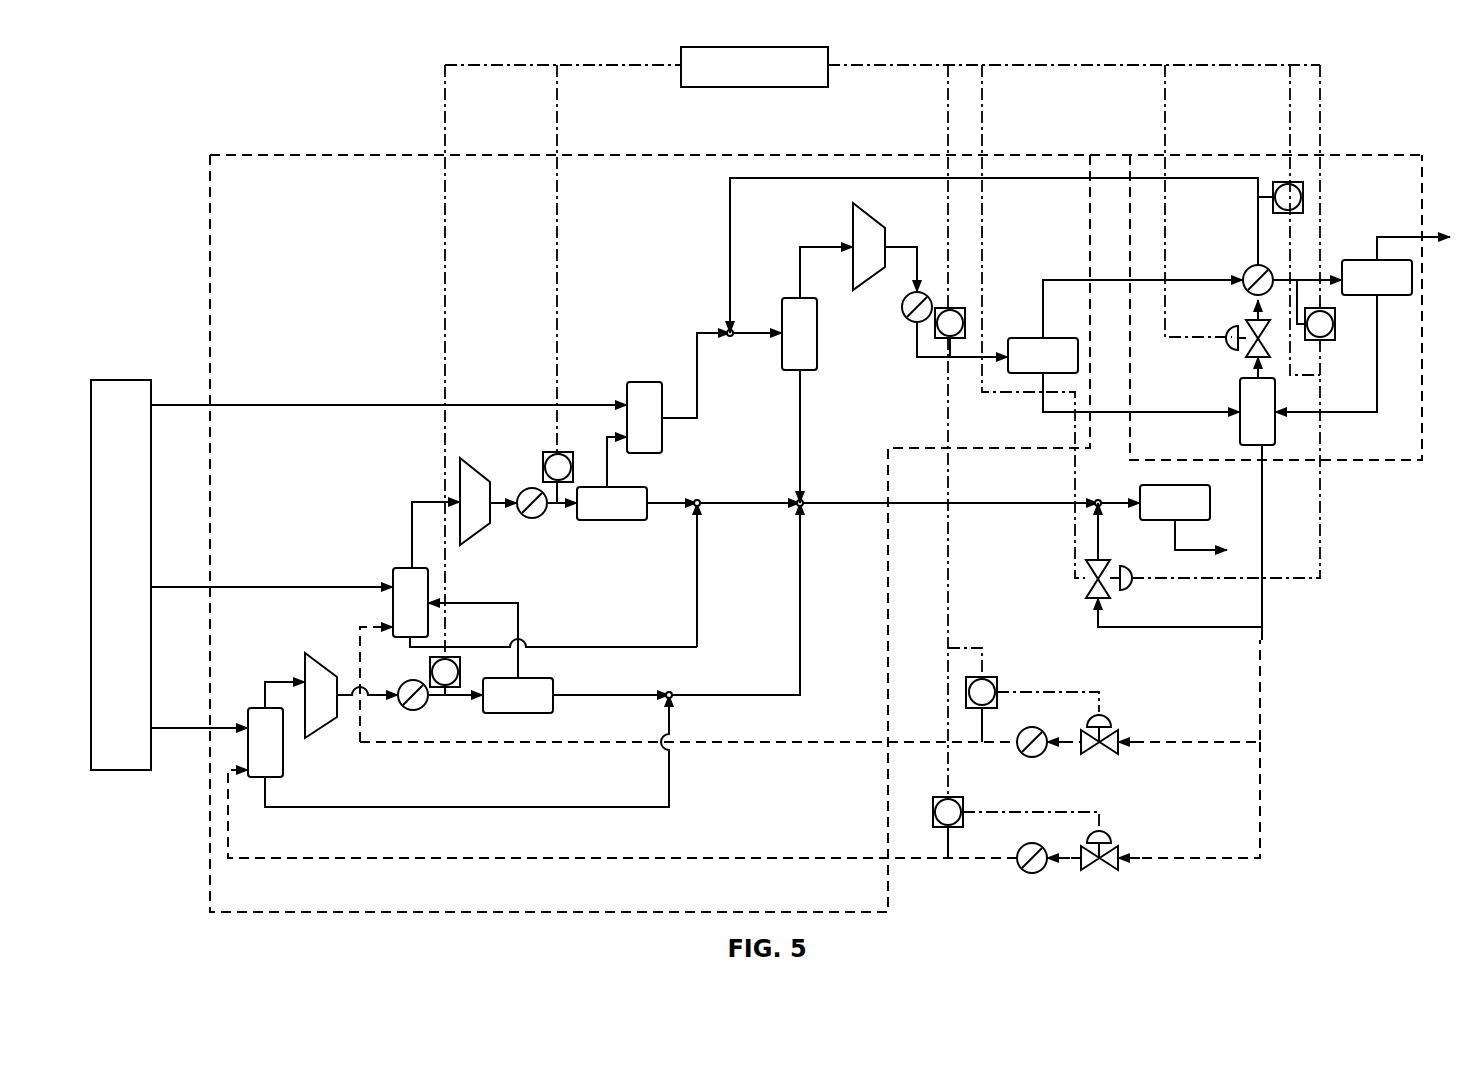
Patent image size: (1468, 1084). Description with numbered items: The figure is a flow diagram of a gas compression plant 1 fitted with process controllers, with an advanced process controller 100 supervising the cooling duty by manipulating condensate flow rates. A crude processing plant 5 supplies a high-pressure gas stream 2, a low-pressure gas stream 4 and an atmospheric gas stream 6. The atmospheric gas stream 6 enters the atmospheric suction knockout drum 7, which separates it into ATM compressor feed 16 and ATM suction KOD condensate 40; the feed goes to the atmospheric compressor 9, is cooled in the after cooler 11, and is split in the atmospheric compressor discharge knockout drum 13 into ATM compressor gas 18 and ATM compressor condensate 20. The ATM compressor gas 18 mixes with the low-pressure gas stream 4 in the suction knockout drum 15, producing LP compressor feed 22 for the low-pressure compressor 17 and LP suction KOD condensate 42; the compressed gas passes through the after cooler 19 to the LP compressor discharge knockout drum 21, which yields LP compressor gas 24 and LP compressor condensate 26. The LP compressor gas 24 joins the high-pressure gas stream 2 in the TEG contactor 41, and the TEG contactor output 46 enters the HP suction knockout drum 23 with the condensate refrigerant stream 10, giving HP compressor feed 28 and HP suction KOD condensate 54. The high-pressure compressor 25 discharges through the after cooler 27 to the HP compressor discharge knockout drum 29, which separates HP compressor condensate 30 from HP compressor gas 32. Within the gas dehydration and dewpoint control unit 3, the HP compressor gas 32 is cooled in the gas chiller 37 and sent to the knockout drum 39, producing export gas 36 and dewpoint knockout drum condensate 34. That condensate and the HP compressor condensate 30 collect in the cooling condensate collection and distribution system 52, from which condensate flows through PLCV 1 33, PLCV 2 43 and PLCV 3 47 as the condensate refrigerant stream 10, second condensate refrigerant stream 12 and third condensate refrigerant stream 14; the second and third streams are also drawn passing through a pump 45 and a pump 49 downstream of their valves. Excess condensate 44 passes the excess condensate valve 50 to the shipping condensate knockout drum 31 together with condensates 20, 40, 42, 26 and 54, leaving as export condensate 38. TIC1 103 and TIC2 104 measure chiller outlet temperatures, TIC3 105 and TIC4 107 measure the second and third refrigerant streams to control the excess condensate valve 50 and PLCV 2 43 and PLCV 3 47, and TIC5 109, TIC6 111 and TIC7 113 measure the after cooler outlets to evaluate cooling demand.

The gas compression plant 1 is at (272, 155).
The high-pressure gas stream 2 is at (190, 405).
The gas dehydration and dewpoint control unit 3 is at (1218, 155).
The low-pressure gas stream 4 is at (190, 587).
The crude processing plant 5 is at (122, 380).
The atmospheric gas stream 6 is at (190, 728).
The atmospheric suction knockout drum 7 is at (283, 760).
The atmospheric compressor 9 is at (318, 660).
The condensate refrigerant stream 10 is at (1118, 178).
The after cooler 11 is at (411, 711).
The second condensate refrigerant stream 12 is at (836, 742).
The atmospheric compressor discharge knockout drum 13 is at (516, 713).
The third condensate refrigerant stream 14 is at (766, 858).
The suction knockout drum 15 is at (393, 577).
The ATM compressor feed 16 is at (265, 682).
The low-pressure compressor 17 is at (462, 472).
The ATM compressor gas 18 is at (462, 603).
The after cooler 19 is at (530, 488).
The ATM compressor condensate 20 is at (636, 695).
The LP compressor discharge knockout drum 21 is at (597, 487).
The LP compressor feed 22 is at (412, 522).
The HP suction knockout drum 23 is at (790, 298).
The LP compressor gas 24 is at (615, 437).
The high-pressure compressor 25 is at (868, 214).
The LP compressor condensate 26 is at (664, 500).
The after cooler 27 is at (905, 312).
The HP compressor feed 28 is at (835, 247).
The HP compressor discharge knockout drum 29 is at (1020, 338).
The HP compressor condensate 30 is at (1202, 412).
The shipping condensate knockout drum 31 is at (1180, 485).
The HP compressor gas 32 is at (1062, 280).
The PLCV 1 33 is at (1248, 325).
The dewpoint knockout drum condensate 34 is at (1368, 410).
The export gas 36 is at (1430, 237).
The gas chiller 37 is at (1248, 270).
The export condensate 38 is at (1200, 550).
The knockout drum 39 is at (1360, 260).
The ATM suction KOD condensate 40 is at (466, 807).
The TEG contactor 41 is at (640, 382).
The LP suction KOD condensate 42 is at (672, 647).
The PLCV 2 43 is at (1108, 732).
The excess condensate 44 is at (1190, 627).
The pump 45 is at (1022, 752).
The TEG contactor output 46 is at (718, 333).
The PLCV 3 47 is at (1108, 848).
The pump 49 is at (1022, 868).
The excess condensate valve 50 is at (1088, 583).
The cooling condensate collection and distribution system 52 is at (1270, 448).
The HP suction KOD condensate 54 is at (800, 418).
The advanced process controller 100 is at (737, 79).
The TIC1 103 is at (1320, 326).
The TIC2 104 is at (1300, 185).
The TIC3 105 is at (978, 688).
The TIC4 107 is at (935, 805).
The TIC5 109 is at (445, 672).
The TIC6 111 is at (550, 460).
The TIC7 113 is at (950, 340).